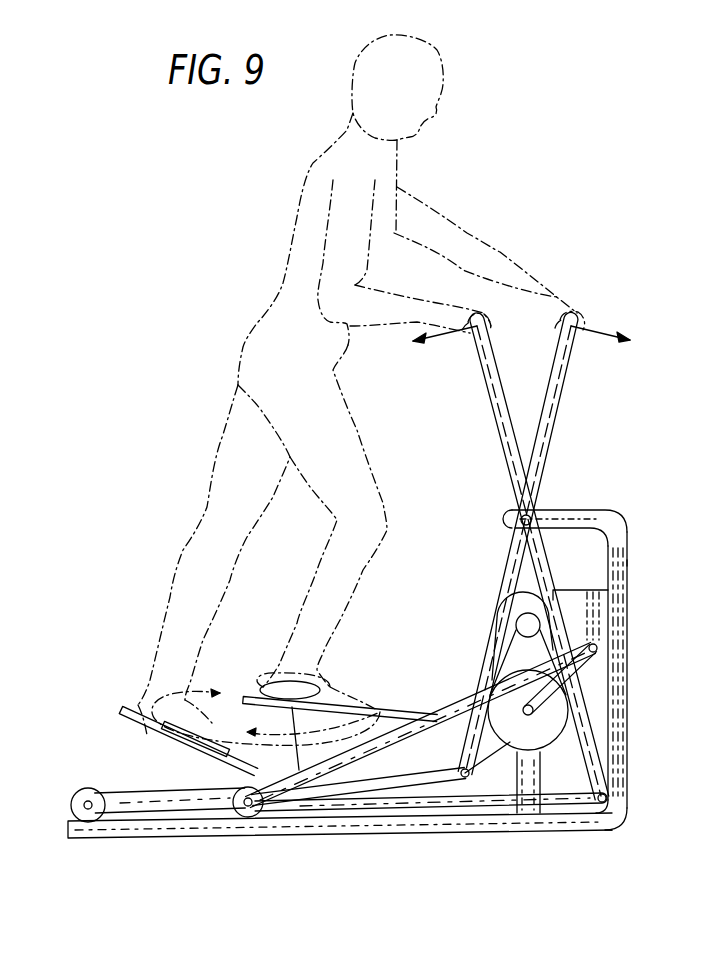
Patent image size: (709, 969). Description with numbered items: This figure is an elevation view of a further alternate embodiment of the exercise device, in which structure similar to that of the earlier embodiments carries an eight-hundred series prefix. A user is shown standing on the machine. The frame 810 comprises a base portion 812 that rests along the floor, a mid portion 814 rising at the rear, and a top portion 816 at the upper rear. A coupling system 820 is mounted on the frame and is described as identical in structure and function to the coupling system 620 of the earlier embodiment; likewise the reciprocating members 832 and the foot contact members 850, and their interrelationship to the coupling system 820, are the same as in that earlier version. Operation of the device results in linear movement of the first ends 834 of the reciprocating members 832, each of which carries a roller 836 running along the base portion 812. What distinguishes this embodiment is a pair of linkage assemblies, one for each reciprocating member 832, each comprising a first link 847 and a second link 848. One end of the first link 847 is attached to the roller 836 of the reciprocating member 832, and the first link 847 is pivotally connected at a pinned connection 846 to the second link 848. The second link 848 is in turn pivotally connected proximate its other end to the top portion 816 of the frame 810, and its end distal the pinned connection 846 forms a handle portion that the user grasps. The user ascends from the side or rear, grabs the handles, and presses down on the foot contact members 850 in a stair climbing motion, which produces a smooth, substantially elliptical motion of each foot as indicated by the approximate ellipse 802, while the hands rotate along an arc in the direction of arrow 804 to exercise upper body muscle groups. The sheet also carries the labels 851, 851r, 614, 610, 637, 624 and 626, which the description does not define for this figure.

The approximate ellipse 802 is at (203, 693).
The arrow 804 is at (600, 328).
The frame 810 is at (627, 564).
The base portion 812 is at (378, 834).
The mid portion 814 is at (622, 637).
The top portion 816 is at (576, 510).
The coupling system 820 is at (573, 744).
The reciprocating member 832 is at (457, 700).
The first end 834 is at (120, 812).
The roller 836 is at (70, 805).
The pinned connection 846 is at (608, 827).
The first link 847 is at (482, 802).
The second link 848 is at (495, 413).
The foot contact member 850 is at (373, 703).
The left pedal lever 851 is at (121, 708).
The right pedal lever 851r is at (395, 712).
The label 614 is at (22, 368).
The label 610 is at (22, 443).
The label 637 is at (20, 543).
The label 624 is at (20, 610).
The coupling system 620 is at (20, 686).
The label 626 is at (20, 733).